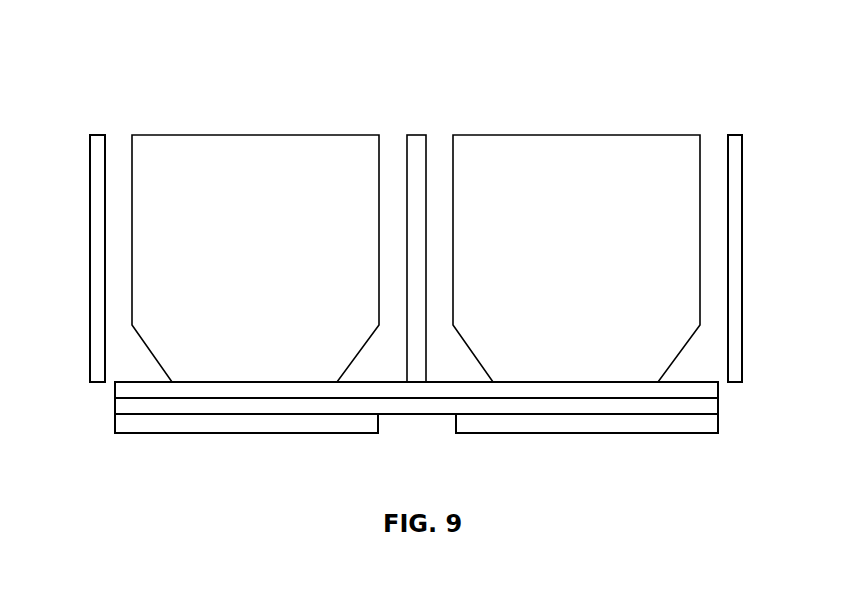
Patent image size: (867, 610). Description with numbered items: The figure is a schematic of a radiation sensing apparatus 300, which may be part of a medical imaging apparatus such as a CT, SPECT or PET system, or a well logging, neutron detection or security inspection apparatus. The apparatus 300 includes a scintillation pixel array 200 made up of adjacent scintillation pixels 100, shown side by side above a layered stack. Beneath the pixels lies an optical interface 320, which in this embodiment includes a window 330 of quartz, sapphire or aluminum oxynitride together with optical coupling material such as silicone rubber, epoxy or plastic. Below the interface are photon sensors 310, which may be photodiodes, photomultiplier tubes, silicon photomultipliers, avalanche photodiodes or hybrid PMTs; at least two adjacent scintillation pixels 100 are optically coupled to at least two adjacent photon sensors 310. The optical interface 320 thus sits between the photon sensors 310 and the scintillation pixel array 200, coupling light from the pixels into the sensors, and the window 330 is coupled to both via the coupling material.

The radiation sensing apparatus 300 is at (786, 76).
The scintillation pixel array 200 is at (700, 80).
The scintillation pixel 100 is at (597, 156).
The window 330 is at (117, 388).
The optical interface 320 is at (408, 390).
The photon sensor 310 is at (163, 427).